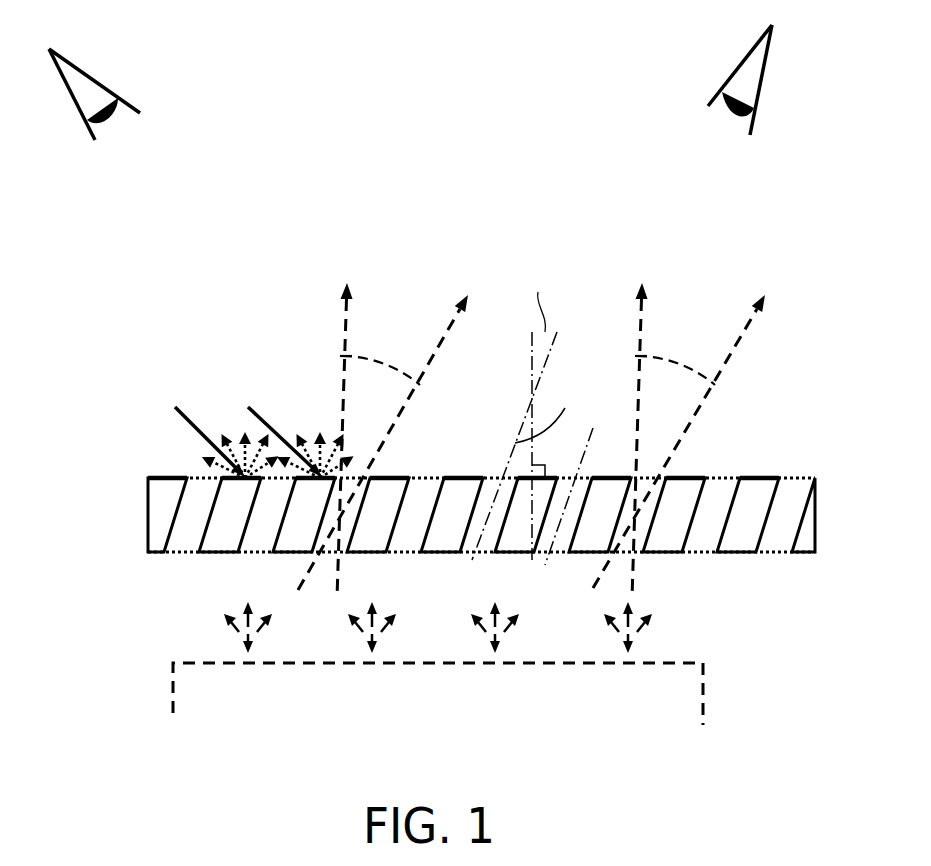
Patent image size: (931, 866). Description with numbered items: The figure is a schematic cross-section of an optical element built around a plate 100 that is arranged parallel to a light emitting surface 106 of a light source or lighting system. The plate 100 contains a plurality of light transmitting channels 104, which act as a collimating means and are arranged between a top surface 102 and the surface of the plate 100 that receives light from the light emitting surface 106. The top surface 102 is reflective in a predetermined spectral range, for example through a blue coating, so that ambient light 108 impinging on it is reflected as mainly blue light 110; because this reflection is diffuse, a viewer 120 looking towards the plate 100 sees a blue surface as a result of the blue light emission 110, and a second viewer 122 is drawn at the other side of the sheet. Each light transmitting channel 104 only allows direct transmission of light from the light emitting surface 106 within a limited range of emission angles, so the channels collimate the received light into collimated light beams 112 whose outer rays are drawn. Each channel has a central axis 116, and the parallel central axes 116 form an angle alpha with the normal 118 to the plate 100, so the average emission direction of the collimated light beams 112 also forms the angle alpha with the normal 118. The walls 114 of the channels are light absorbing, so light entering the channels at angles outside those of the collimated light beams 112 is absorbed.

The plate 100 is at (448, 515).
The top surface 102 is at (142, 474).
The light transmitting channels 104 is at (258, 538).
The light emitting surface 106 is at (166, 660).
The ambient light 108 is at (268, 410).
The blue light emission 110 is at (200, 457).
The collimated light beams 112 is at (380, 363).
The walls 114 is at (690, 541).
The central axis 116 is at (583, 453).
The normal 118 is at (530, 358).
The viewer 120 is at (78, 70).
The second viewer / eye 122 is at (738, 65).